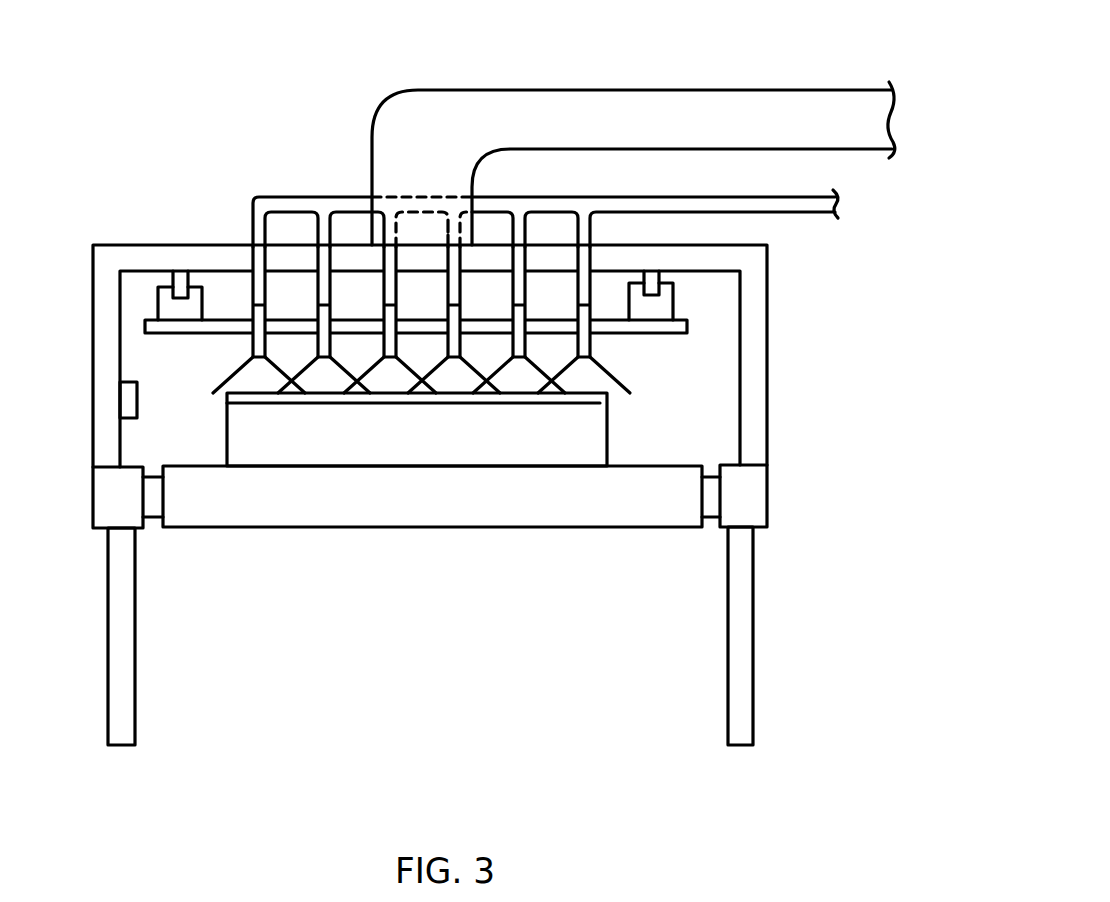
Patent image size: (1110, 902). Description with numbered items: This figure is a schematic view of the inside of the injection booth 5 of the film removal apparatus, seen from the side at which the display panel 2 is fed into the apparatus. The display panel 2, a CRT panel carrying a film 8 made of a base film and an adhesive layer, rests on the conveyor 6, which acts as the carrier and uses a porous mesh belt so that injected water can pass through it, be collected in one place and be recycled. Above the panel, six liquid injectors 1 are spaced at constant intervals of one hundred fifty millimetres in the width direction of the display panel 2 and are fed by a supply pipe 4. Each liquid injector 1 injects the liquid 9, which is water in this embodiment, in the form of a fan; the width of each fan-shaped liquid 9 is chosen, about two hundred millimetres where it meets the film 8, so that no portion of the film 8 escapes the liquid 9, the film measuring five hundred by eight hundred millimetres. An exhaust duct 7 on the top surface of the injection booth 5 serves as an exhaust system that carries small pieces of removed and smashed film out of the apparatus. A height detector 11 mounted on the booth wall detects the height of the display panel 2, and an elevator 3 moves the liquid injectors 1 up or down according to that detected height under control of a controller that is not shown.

The liquid injector 1 is at (258, 352).
The display panel 2 is at (240, 443).
The elevator 3 is at (158, 302).
The supply pipe 4 is at (653, 197).
The injection booth 5 is at (768, 408).
The conveyor 6 is at (587, 513).
The exhaust duct 7 is at (722, 90).
The film 8 is at (600, 403).
The liquid 9 is at (597, 377).
The height detector 11 is at (130, 403).